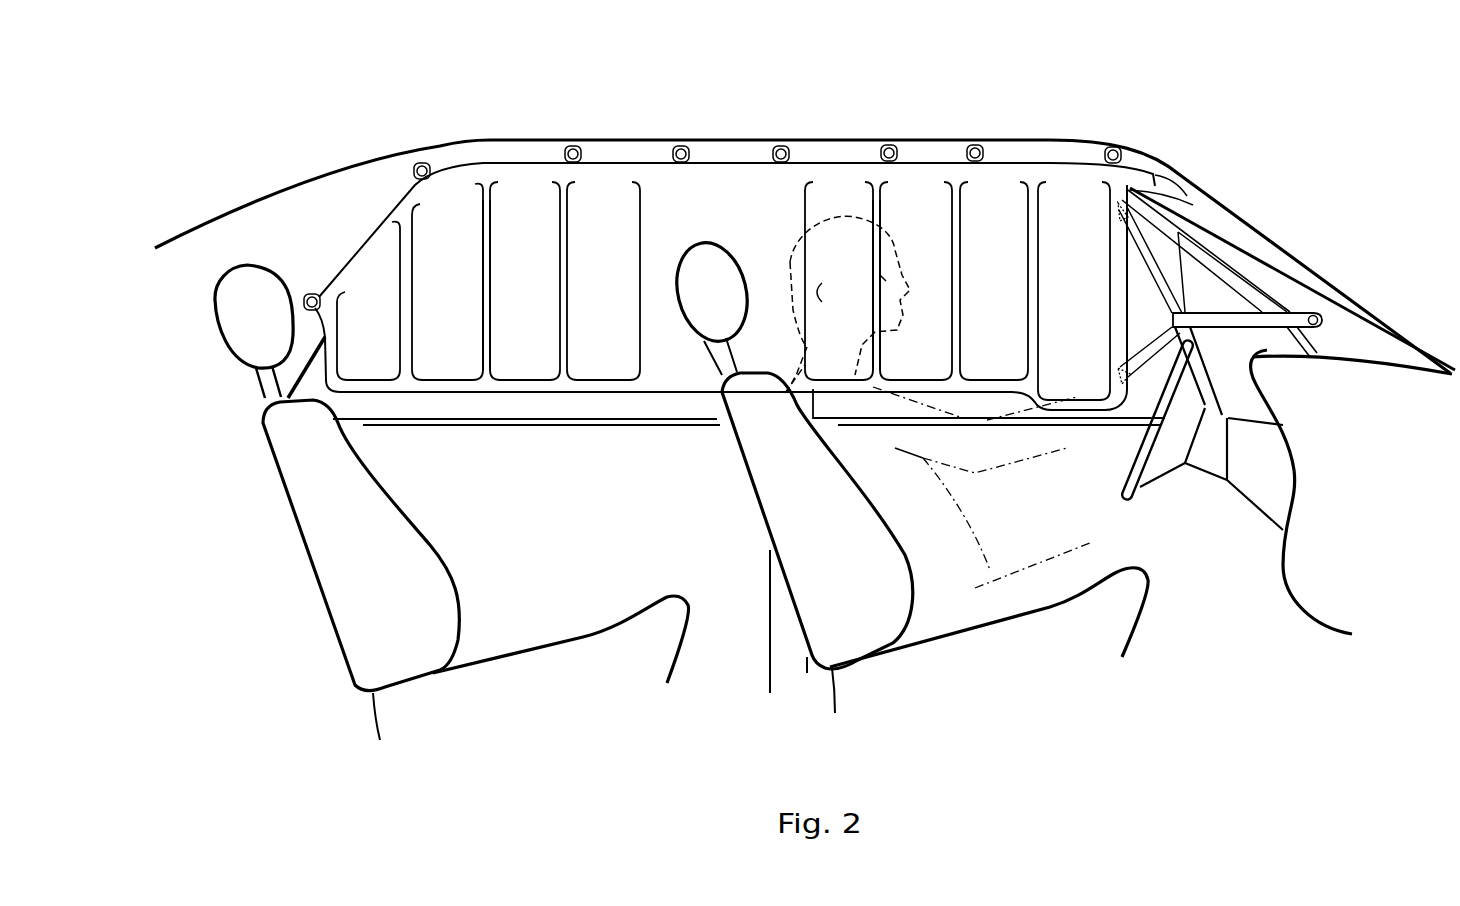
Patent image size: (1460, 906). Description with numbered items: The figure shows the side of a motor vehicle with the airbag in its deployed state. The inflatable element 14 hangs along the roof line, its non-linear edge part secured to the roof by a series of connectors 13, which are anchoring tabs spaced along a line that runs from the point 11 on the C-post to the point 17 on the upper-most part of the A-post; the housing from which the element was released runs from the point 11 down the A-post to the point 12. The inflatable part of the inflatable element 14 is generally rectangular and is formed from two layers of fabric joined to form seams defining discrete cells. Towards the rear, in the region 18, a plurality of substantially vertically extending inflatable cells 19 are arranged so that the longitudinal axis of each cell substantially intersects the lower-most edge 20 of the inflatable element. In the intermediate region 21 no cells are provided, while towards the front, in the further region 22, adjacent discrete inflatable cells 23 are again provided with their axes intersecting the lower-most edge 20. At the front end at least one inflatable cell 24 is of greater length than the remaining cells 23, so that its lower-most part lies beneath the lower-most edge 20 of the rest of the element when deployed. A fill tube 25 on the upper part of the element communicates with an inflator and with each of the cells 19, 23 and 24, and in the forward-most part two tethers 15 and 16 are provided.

The point on the C-post 11 is at (313, 322).
The point on the A-post 12 is at (1322, 317).
The connectors 13 is at (305, 296).
The inflatable element 14 is at (742, 163).
The tether 15 is at (1247, 320).
The tether 16 is at (1268, 313).
The point on the A-post 17 is at (1153, 170).
The rear region 18 is at (444, 167).
The inflatable cells 19 is at (370, 360).
The lower-most edge 20 is at (469, 393).
The intermediate region 21 is at (663, 387).
The front region 22 is at (1062, 163).
The inflatable cells 23 is at (935, 345).
The inflatable cell 24 is at (1087, 365).
The fill tube 25 is at (530, 175).